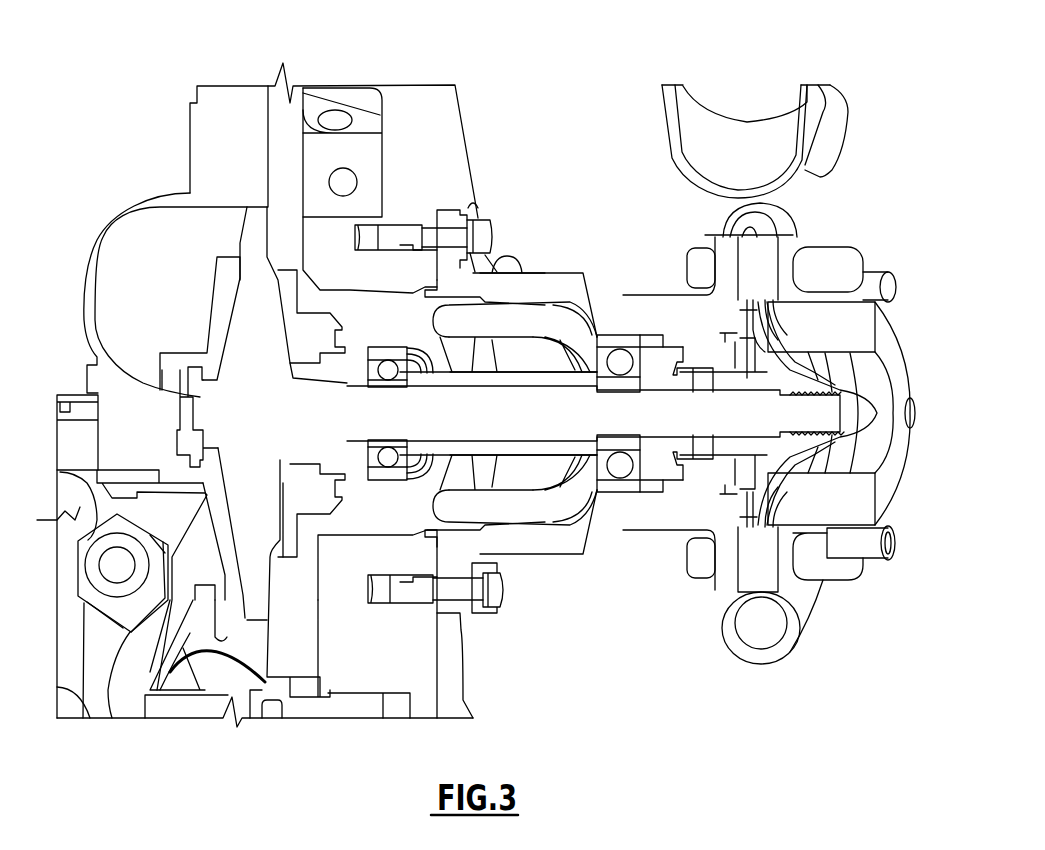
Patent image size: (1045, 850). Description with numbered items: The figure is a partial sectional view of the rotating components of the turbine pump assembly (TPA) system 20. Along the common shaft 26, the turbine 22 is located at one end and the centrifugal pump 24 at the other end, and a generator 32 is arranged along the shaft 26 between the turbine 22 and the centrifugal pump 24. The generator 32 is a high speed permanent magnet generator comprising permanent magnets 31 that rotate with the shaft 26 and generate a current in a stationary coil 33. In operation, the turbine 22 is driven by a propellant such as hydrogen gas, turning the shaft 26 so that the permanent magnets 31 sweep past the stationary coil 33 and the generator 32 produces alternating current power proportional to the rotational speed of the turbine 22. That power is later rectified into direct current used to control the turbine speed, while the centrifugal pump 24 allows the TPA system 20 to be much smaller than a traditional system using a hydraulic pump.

The turbine pump assembly system 20 is at (90, 65).
The turbine 22 is at (257, 233).
The centrifugal pump 24 is at (827, 457).
The shaft 26 is at (630, 403).
The permanent magnets 31 is at (523, 357).
The generator 32 is at (542, 475).
The stationary coil 33 is at (523, 312).